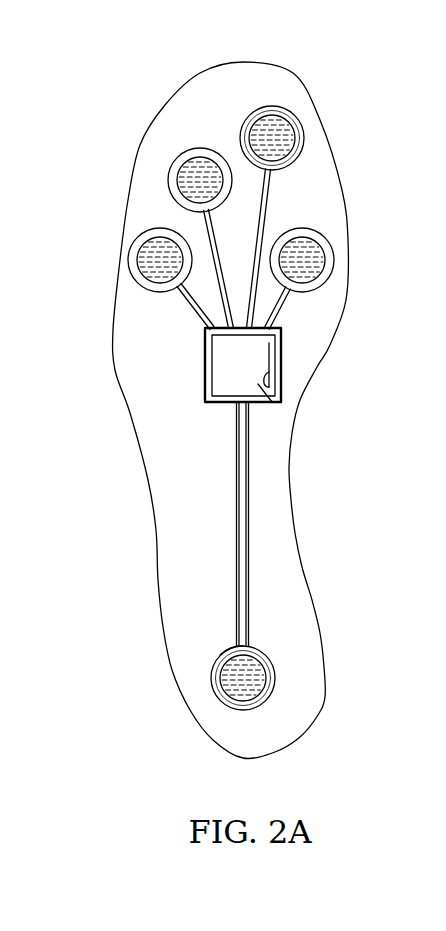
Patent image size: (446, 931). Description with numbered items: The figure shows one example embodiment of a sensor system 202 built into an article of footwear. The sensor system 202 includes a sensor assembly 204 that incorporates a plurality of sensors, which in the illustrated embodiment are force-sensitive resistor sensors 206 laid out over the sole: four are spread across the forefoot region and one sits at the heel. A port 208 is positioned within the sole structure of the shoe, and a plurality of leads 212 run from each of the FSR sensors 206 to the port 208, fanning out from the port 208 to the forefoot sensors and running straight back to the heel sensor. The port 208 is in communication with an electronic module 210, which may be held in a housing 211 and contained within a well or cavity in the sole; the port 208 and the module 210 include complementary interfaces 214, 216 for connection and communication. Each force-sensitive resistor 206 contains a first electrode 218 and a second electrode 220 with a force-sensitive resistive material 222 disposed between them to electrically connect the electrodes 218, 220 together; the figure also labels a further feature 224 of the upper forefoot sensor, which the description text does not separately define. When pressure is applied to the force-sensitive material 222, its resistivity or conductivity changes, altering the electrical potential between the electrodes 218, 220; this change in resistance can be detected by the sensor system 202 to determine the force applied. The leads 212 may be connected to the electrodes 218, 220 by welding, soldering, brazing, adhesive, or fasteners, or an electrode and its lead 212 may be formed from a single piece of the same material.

The sensor system 202 is at (195, 400).
The sensor assembly 204 is at (256, 536).
The force-sensitive resistor (FSR) sensor 206 is at (183, 150).
The port 208 is at (202, 370).
The electronic module 210 is at (272, 402).
The housing 211 is at (203, 353).
The lead 212 is at (185, 300).
The interface 214 is at (281, 358).
The interface 216 is at (250, 382).
The first electrode 218 is at (262, 118).
The second electrode 220 is at (288, 110).
The force-sensitive resistive material 222 is at (222, 657).
The conductive contact surface 224 is at (290, 142).